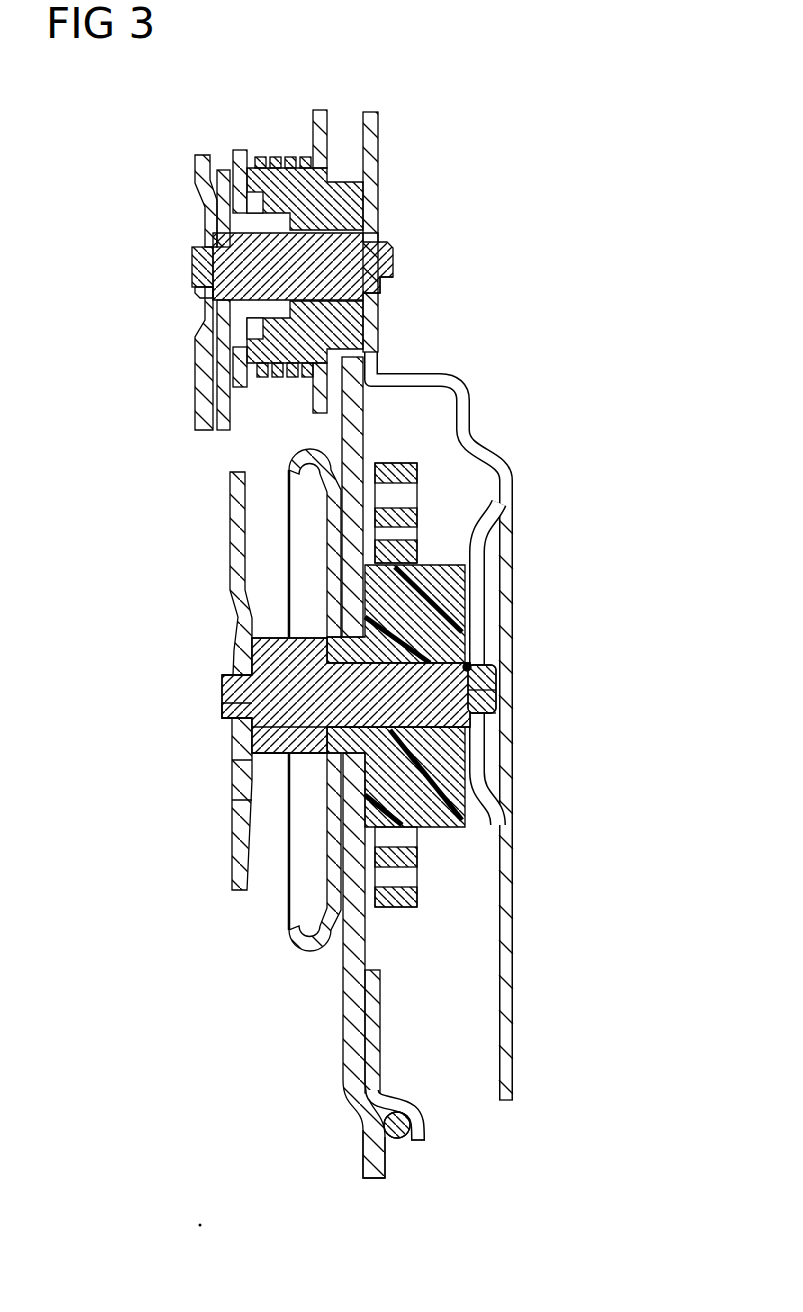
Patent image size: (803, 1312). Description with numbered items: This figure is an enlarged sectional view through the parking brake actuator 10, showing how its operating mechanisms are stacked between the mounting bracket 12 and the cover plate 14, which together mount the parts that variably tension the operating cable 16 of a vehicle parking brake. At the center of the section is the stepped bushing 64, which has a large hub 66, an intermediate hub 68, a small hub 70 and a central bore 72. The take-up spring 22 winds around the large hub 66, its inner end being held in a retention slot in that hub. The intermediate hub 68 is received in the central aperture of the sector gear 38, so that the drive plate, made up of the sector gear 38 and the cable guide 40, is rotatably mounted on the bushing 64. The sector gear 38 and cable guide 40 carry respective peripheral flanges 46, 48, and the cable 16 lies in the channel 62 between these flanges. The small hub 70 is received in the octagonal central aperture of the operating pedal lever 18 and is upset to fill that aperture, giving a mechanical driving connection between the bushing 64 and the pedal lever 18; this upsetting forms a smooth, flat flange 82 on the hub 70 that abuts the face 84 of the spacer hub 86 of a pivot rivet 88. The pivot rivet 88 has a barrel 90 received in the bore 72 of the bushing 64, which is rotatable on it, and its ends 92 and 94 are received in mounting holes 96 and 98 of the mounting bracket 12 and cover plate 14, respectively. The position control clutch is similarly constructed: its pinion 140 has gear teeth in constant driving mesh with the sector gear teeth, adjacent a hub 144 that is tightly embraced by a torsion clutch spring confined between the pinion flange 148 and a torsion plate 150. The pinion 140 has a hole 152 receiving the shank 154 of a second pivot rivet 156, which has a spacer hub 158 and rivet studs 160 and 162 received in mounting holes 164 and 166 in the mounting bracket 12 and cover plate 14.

The parking brake actuator 10 is at (550, 622).
The mounting bracket 12 is at (465, 393).
The cover plate 14 is at (195, 163).
The operating cable 16 is at (397, 1140).
The operating pedal lever 18 is at (291, 930).
The take-up spring 22 is at (393, 463).
The sector gear 38 is at (343, 1058).
The cable guide 40 is at (380, 1010).
The peripheral flange 46 is at (365, 1163).
The peripheral flange 48 is at (420, 1110).
The channel 62 is at (408, 1126).
The stepped bushing 64 is at (452, 565).
The large hub 66 is at (465, 593).
The intermediate hub 68 is at (247, 797).
The small hub 70 is at (330, 603).
The central bore 72 is at (468, 664).
The flange 82 is at (262, 652).
The face 84 is at (240, 733).
The spacer hub 86 is at (243, 777).
The pivot rivet 88 is at (480, 667).
The barrel 90 is at (462, 762).
The end 92 is at (483, 672).
The end 94 is at (221, 690).
The mounting hole 96 is at (490, 690).
The mounting hole 98 is at (222, 708).
The pinion 140 is at (338, 172).
The hub 144 is at (279, 158).
The pinion flange 148 is at (245, 150).
The torsion plate 150 is at (322, 112).
The hole 152 is at (378, 313).
The shank 154 is at (366, 236).
The pivot rivet 156 is at (368, 232).
The spacer hub 158 is at (205, 305).
The rivet stud 160 is at (397, 258).
The rivet stud 162 is at (190, 268).
The mounting hole 164 is at (381, 283).
The mounting hole 166 is at (192, 288).